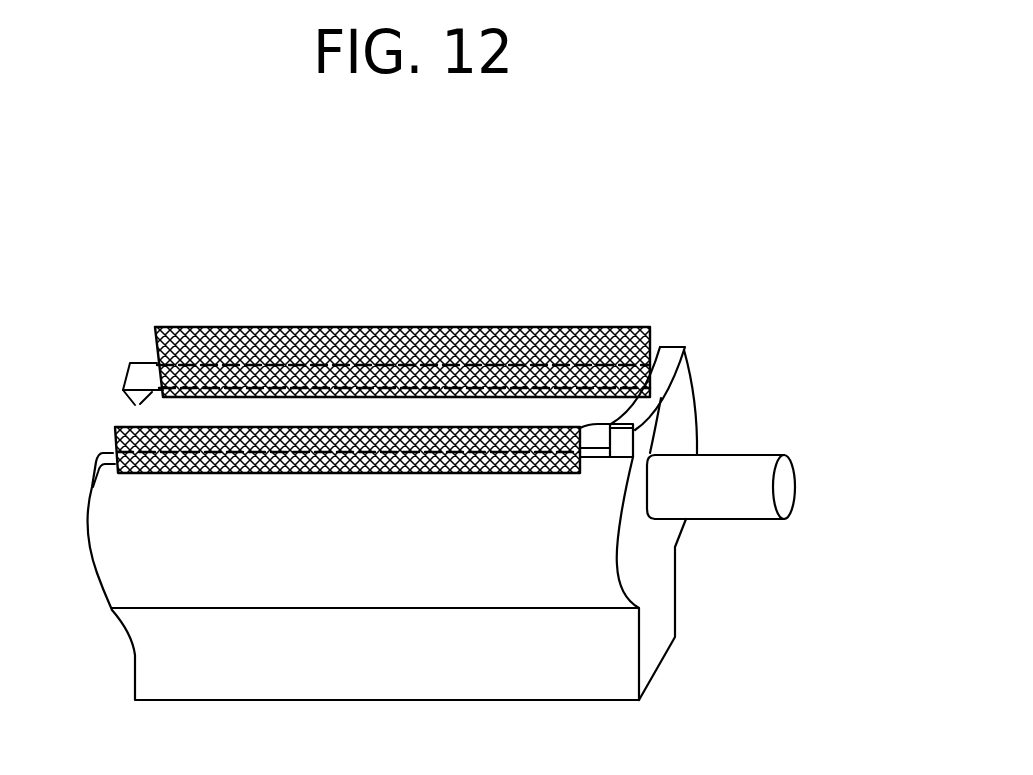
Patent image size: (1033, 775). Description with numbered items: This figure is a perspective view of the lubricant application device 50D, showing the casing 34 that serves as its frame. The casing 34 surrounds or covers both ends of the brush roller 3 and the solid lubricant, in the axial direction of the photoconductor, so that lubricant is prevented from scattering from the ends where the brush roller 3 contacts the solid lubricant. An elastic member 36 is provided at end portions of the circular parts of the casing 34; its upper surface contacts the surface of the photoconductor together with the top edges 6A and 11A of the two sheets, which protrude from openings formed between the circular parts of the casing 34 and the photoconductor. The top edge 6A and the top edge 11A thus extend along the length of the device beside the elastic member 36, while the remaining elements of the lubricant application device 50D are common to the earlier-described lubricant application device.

The lubricant application device 50D is at (722, 212).
The top edge 11A is at (375, 305).
The elastic member 36 is at (683, 363).
The brush roller 3 is at (131, 404).
The top edge 6A is at (93, 487).
The casing 34 is at (670, 590).